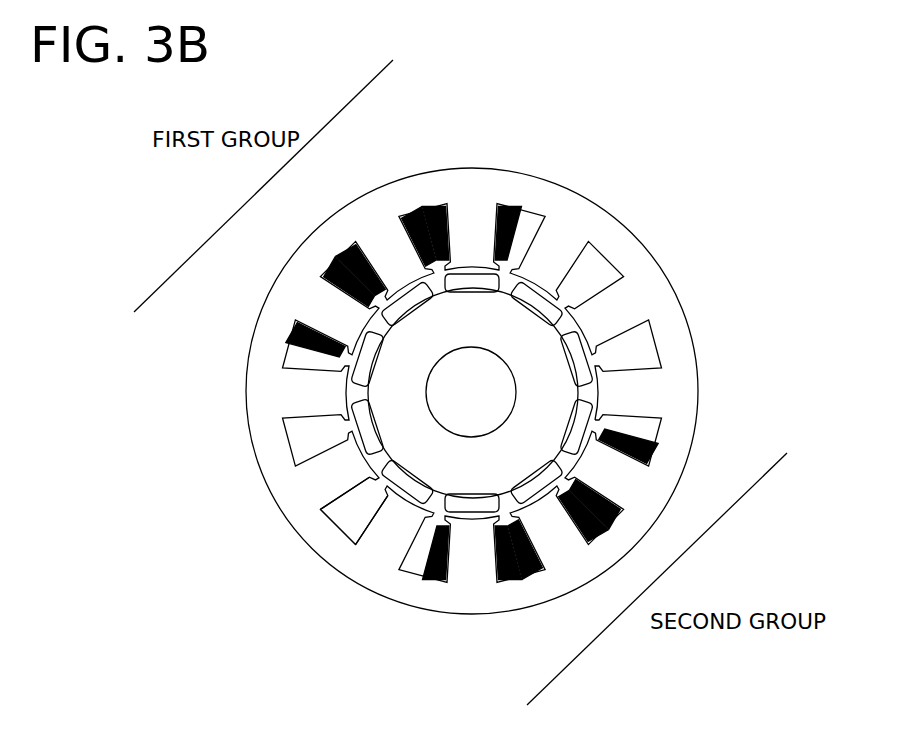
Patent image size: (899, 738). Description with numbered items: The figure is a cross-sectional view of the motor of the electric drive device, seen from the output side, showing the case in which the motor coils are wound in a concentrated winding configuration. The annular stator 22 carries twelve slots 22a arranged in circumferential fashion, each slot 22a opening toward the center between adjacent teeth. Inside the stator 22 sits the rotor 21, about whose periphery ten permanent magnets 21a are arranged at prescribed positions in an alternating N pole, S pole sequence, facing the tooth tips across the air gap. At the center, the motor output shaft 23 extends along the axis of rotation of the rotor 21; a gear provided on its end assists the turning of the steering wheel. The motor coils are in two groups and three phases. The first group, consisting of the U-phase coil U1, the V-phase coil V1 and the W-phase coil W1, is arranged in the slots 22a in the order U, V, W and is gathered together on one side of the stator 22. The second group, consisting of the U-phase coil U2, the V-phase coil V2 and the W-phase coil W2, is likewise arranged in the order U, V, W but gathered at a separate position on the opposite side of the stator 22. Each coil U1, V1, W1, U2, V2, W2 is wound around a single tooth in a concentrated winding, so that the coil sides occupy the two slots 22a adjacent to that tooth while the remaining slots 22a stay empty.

The rotor 21 is at (437, 496).
The permanent magnet 21a is at (370, 363).
The stator 22 is at (608, 207).
The slot 22a is at (340, 528).
The motor output shaft 23 is at (483, 433).
The U-phase coil of first group U1 is at (512, 206).
The V-phase coil of first group V1 is at (420, 208).
The W-phase coil of first group W1 is at (323, 271).
The U-phase coil of second group U2 is at (452, 580).
The V-phase coil of second group V2 is at (542, 568).
The W-phase coil of second group W2 is at (655, 465).